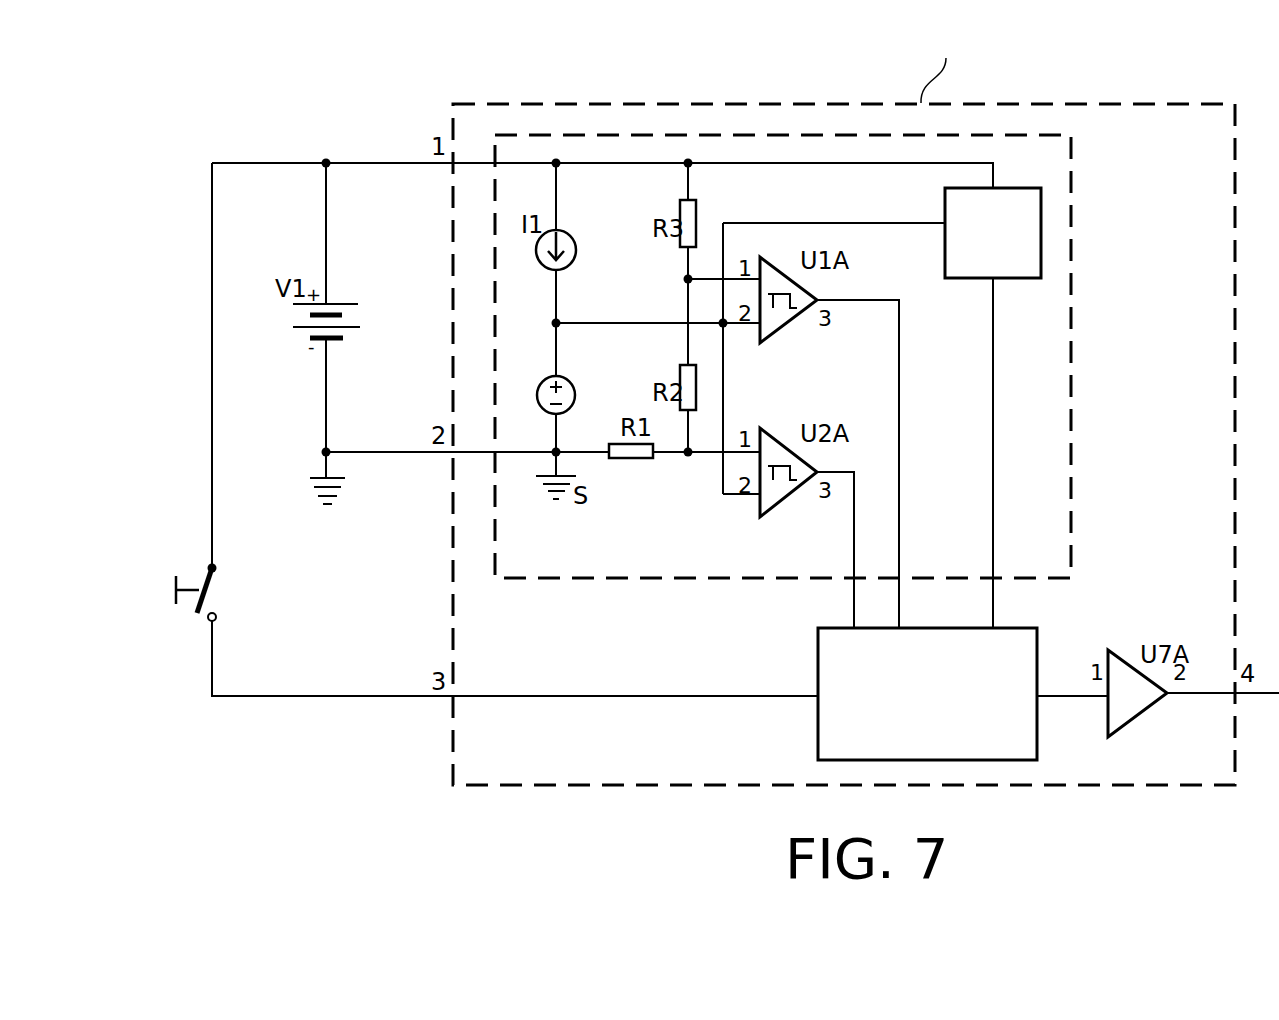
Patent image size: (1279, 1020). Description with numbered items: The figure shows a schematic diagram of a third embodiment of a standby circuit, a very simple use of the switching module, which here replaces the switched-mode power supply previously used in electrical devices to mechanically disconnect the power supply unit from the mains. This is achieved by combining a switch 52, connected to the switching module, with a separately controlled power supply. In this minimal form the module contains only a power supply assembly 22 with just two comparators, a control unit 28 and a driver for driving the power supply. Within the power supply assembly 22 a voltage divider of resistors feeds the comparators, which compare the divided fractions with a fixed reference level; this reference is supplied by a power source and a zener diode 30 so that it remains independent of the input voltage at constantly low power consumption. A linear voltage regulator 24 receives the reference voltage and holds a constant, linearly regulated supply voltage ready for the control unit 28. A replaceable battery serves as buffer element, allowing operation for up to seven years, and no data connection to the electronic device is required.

The power supply assembly 22 is at (1075, 272).
The linear voltage regulator 24 is at (1007, 247).
The control unit 28 is at (944, 704).
The zener diode 30 is at (571, 384).
The switch 52 is at (193, 590).